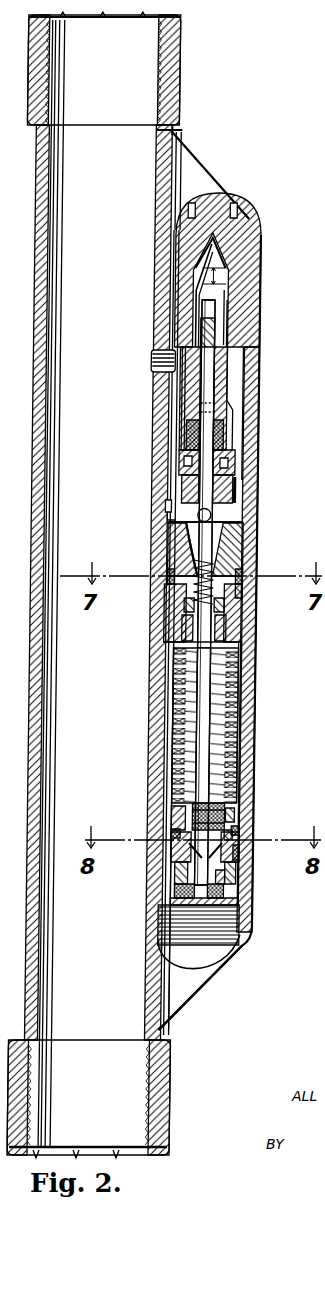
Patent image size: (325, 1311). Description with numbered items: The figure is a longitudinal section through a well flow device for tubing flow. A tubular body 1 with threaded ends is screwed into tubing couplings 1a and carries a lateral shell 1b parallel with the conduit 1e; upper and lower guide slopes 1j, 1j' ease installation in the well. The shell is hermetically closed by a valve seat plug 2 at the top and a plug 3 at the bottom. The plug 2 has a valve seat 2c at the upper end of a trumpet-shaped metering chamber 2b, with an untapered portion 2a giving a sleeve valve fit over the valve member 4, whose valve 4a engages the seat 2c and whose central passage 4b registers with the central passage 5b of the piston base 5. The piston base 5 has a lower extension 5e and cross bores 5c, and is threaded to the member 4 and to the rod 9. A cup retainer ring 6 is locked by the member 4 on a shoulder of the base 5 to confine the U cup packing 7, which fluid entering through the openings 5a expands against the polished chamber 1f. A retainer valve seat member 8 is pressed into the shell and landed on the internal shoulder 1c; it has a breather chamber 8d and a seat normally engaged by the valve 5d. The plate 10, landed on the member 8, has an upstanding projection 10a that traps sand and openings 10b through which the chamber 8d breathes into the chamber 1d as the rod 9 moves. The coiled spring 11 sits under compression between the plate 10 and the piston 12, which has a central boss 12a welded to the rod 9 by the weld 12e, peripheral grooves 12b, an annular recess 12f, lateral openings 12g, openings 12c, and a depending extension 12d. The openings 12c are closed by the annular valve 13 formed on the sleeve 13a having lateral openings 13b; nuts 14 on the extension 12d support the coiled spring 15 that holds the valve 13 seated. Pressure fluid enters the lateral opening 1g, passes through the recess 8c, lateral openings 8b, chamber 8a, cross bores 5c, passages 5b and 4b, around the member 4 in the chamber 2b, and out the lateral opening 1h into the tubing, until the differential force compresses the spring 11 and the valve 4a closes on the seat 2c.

The tubular body 1 is at (40, 326).
The tubing couplings 1a is at (180, 57).
The lateral shell 1b is at (250, 388).
The internal shoulder 1c is at (160, 505).
The chamber 1d is at (235, 735).
The conduit 1e is at (150, 128).
The polished chamber 1f is at (235, 403).
The lateral opening 1g is at (250, 568).
The lateral opening 1h is at (153, 365).
The guide slope 1j is at (212, 180).
The guide slope 1j' is at (205, 967).
The valve seat plug 2 is at (233, 233).
The untapered portion 2a is at (211, 277).
The metering chamber 2b is at (222, 300).
The valve seat 2c is at (200, 247).
The plug 3 is at (253, 932).
The valve member 4 is at (200, 387).
The valve 4a is at (196, 303).
The central passage 4b is at (223, 402).
The piston base 5 is at (183, 493).
The openings 5a is at (245, 495).
The central passage 5b is at (197, 430).
The cross bores 5c is at (220, 518).
The valve 5d is at (178, 590).
The lower extension 5e is at (198, 530).
The cup retainer ring 6 is at (178, 458).
The U cup packing 7 is at (237, 475).
The retainer valve seat member 8 is at (237, 610).
The chamber 8a is at (232, 532).
The lateral openings 8b is at (170, 567).
The recess 8c is at (248, 583).
The breather chamber 8d is at (198, 612).
The rod 9 is at (203, 693).
The plate 10 is at (233, 637).
The upstanding projection 10a is at (170, 627).
The openings 10b is at (223, 620).
The coiled spring 11 is at (170, 730).
The piston 12 is at (165, 847).
The central boss 12a is at (170, 807).
The peripheral grooves 12b is at (165, 829).
The openings 12c is at (232, 810).
The depending extension 12d is at (172, 870).
The weld 12e is at (216, 805).
The annular recess 12f is at (247, 852).
The lateral openings 12g is at (233, 833).
The annular valve 13 is at (232, 870).
The sleeve 13a is at (230, 892).
The lateral openings 13b is at (236, 877).
The nuts 14 is at (175, 902).
The coiled spring 15 is at (180, 887).